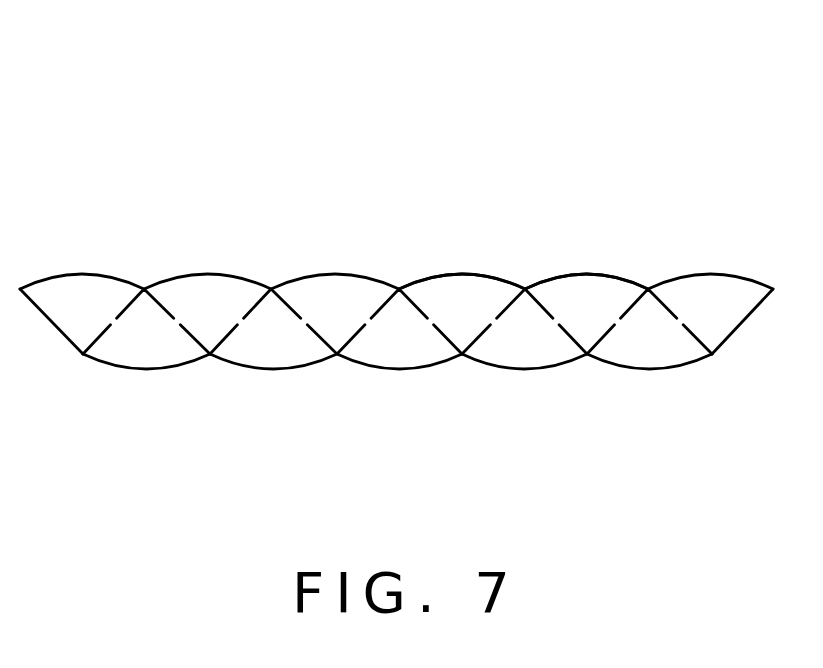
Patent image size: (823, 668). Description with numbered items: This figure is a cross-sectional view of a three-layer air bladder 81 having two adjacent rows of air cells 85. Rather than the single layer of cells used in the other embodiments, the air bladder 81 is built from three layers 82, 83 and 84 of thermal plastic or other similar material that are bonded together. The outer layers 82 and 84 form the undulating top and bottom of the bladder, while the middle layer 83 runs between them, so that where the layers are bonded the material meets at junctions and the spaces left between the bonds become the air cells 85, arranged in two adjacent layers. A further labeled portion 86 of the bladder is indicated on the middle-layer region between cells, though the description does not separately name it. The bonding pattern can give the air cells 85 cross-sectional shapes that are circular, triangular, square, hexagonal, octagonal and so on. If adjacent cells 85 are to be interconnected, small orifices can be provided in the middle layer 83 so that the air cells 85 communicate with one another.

The air bladder 81 is at (396, 232).
The outer layer 82 is at (250, 280).
The middle layer 83 is at (480, 340).
The outer layer 84 is at (148, 372).
The air cells 85 is at (525, 327).
The hidden crossing strand segment 86 is at (240, 322).